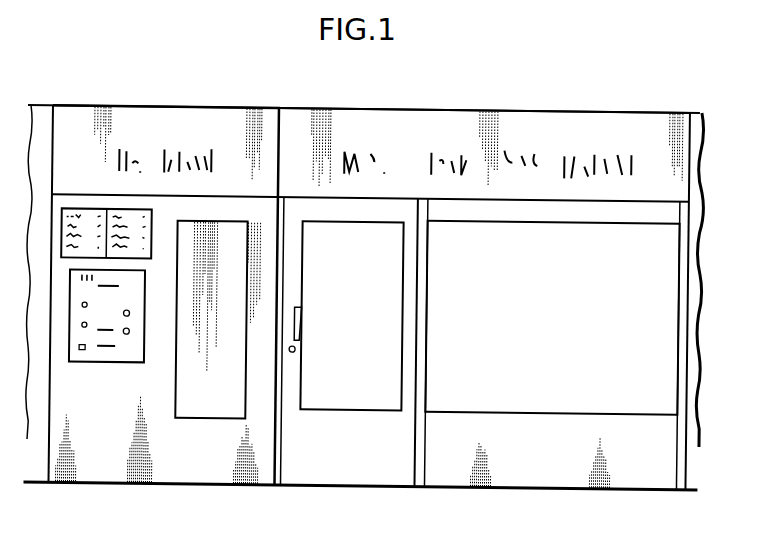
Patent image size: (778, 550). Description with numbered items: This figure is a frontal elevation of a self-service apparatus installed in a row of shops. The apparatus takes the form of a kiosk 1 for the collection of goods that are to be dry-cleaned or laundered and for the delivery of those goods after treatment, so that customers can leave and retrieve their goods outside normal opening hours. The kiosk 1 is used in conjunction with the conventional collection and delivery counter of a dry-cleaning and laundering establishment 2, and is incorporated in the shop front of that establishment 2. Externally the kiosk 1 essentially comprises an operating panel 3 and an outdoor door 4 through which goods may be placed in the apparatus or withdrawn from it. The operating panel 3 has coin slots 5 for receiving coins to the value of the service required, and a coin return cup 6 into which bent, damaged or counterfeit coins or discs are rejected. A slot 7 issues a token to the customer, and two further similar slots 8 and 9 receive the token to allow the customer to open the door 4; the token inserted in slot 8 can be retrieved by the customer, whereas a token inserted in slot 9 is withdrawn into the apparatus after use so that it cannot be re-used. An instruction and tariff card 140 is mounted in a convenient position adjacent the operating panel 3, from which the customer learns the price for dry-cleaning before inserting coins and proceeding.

The kiosk 1 is at (221, 96).
The dry-cleaning and laundering establishment 2 is at (432, 100).
The operating panel 3 is at (95, 336).
The outdoor door 4 is at (214, 416).
The coin slots 5 is at (84, 273).
The coin return cup 6 is at (82, 346).
The slot 7 is at (115, 347).
The slot 8 is at (99, 329).
The slot 9 is at (122, 286).
The instruction and tariff card 140 is at (114, 217).